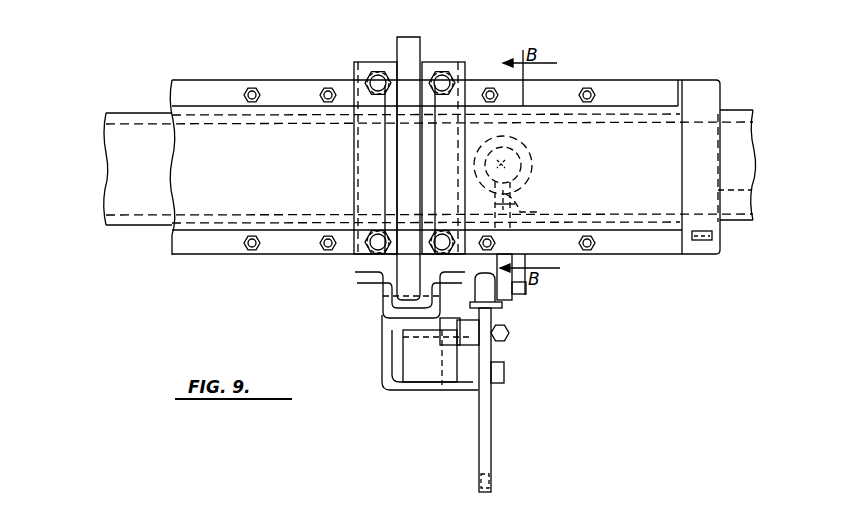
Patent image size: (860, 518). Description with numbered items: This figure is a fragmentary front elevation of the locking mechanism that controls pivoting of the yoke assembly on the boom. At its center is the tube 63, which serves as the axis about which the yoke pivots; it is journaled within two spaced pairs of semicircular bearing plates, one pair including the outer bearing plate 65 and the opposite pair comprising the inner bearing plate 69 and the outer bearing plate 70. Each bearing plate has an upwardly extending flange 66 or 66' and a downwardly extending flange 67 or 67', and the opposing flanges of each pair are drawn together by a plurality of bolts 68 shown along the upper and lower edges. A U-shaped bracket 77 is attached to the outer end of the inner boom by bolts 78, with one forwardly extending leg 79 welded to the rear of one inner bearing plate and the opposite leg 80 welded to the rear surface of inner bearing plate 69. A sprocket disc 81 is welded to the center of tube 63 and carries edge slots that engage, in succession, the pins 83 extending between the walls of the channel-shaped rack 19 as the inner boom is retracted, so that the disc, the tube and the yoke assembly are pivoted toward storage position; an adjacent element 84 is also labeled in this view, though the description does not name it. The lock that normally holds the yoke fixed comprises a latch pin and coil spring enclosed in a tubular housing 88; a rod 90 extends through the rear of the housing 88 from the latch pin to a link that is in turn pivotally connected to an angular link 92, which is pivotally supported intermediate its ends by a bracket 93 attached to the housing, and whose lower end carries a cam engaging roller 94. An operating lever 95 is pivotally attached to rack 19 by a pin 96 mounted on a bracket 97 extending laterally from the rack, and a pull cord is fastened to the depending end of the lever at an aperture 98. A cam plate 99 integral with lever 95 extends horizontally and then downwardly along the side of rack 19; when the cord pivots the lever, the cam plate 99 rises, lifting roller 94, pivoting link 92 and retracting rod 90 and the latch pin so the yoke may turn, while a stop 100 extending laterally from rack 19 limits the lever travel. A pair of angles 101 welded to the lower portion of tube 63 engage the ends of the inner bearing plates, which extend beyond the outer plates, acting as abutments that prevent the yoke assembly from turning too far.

The rack 19 is at (386, 298).
The tube 63 is at (120, 193).
The outer bearing plate 65 is at (178, 182).
The upwardly extending flange 66 is at (709, 149).
The upwardly extending flange 66' is at (443, 150).
The downwardly extending flange 67 is at (707, 269).
The downwardly extending flange 67' is at (444, 256).
The bolts 68 is at (260, 95).
The inner bearing plate 69 is at (748, 189).
The outer bearing plate 70 is at (670, 162).
The U-shaped bracket 77 is at (426, 62).
The bolts 78 is at (380, 67).
The forwardly extending leg 79 is at (357, 62).
The leg 80 is at (466, 69).
The sprocket disc 81 is at (423, 45).
The pins 83 is at (366, 289).
The clamp member 84 is at (358, 273).
The tubular housing 88 is at (521, 170).
The rod 90 is at (524, 154).
The angular link 92 is at (522, 203).
The slot 93 is at (568, 211).
The cam engaging roller 94 is at (480, 287).
The operating lever 95 is at (492, 450).
The pin 96 is at (509, 335).
The bracket 97 is at (450, 344).
The aperture 98 is at (480, 478).
The cam plate 99 is at (503, 306).
The stop 100 is at (505, 377).
The angles 101 is at (710, 237).